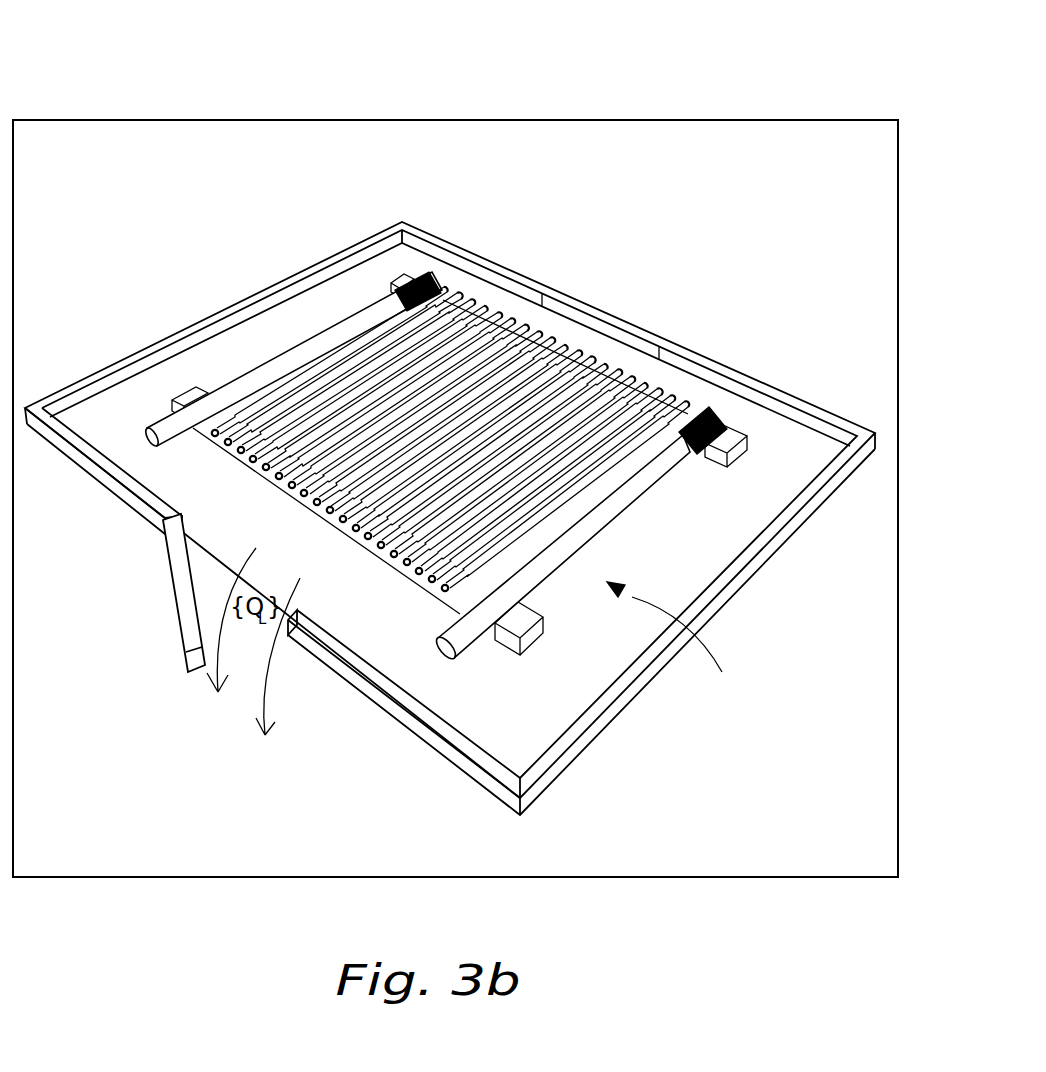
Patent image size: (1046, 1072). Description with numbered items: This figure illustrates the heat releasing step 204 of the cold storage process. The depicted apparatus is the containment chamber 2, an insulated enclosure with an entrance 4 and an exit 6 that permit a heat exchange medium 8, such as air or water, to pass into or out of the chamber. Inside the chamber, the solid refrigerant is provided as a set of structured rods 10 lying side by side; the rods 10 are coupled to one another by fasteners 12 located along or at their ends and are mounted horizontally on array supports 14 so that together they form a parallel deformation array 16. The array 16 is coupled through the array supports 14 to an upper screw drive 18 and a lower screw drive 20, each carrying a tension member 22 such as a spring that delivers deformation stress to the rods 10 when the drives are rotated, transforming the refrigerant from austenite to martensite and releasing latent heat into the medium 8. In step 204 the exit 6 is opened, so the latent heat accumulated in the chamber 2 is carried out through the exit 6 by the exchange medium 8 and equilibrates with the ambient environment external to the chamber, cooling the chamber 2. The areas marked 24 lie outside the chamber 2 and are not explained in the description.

The heat releasing step 204 is at (184, 74).
The containment chamber 2 is at (608, 725).
The entrance 4 is at (622, 325).
The exit 6 is at (177, 637).
The heat exchange medium 8 is at (104, 432).
The refrigerant rods 10 is at (440, 347).
The fasteners 12 is at (668, 390).
The array supports 14 is at (408, 280).
The deformation array 16 is at (679, 641).
The upper screw drive 18 is at (247, 387).
The lower screw drive 20 is at (588, 533).
The tension member 22 is at (430, 277).
The surrounding surface 24 is at (58, 226).